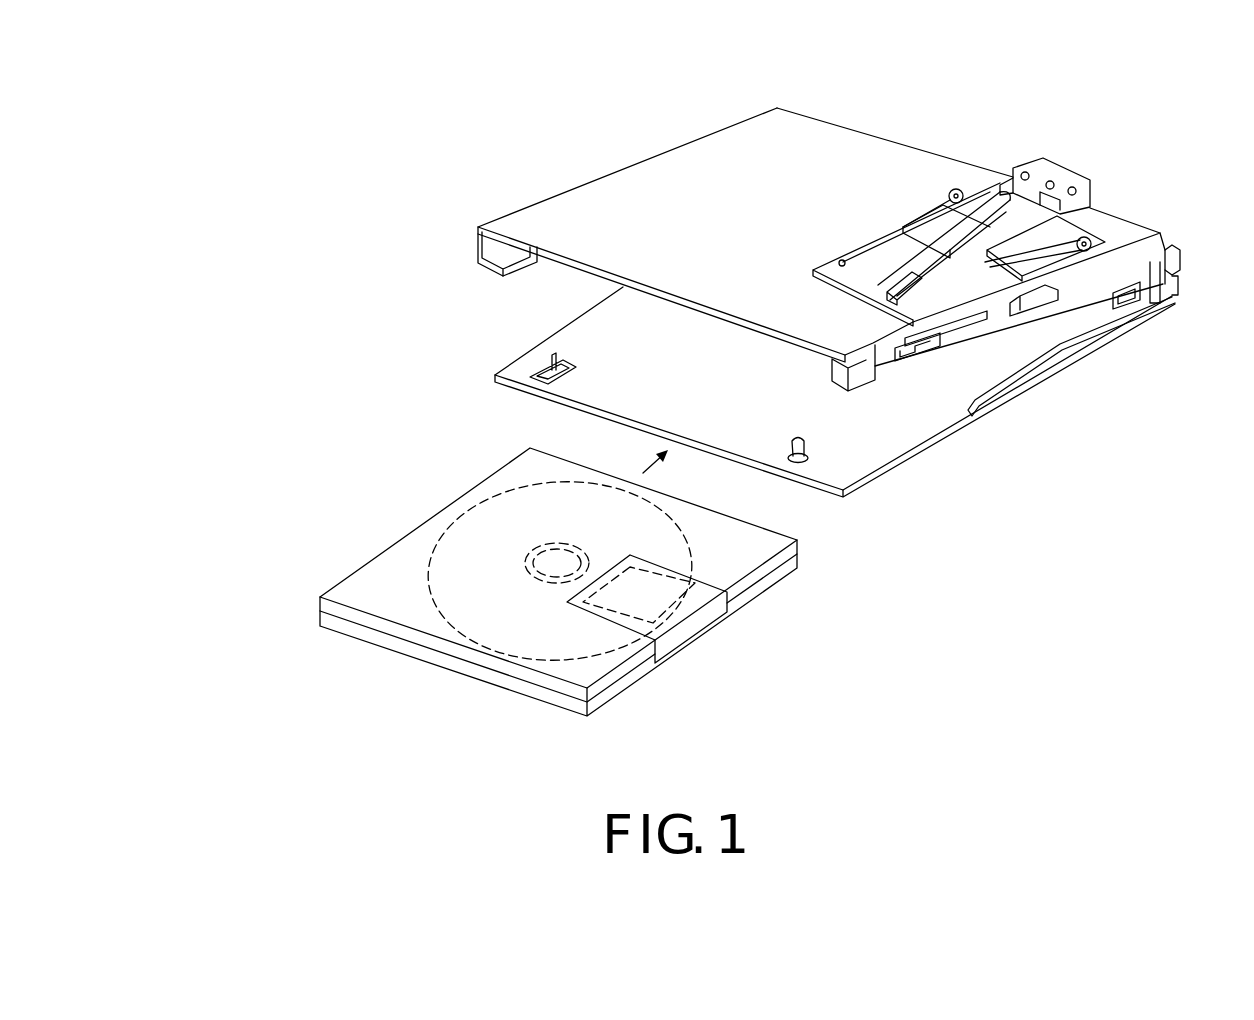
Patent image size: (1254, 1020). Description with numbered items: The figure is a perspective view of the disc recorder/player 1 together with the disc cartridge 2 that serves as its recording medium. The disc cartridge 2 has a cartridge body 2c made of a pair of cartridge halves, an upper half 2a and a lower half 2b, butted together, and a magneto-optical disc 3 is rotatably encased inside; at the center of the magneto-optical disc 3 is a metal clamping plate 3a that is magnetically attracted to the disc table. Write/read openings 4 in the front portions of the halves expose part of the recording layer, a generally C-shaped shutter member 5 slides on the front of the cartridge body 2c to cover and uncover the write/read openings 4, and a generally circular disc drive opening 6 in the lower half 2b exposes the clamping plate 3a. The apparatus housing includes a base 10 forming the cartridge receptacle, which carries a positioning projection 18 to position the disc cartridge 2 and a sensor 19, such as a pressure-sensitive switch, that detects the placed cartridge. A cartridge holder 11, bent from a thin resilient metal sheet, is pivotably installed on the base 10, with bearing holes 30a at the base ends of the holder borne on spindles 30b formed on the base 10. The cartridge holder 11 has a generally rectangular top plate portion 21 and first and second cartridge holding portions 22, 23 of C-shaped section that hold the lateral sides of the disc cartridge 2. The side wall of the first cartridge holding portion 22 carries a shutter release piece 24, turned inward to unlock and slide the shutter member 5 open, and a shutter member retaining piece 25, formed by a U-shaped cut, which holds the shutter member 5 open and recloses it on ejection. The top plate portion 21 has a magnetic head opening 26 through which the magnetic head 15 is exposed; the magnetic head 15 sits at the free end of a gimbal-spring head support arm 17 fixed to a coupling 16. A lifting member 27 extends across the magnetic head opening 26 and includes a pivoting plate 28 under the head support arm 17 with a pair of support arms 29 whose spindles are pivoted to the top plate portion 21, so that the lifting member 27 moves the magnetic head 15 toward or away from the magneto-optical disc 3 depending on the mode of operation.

The disc recorder/player 1 is at (855, 66).
The disc cartridge 2 is at (358, 693).
The upper half 2a is at (317, 600).
The lower half 2b is at (318, 624).
The cartridge body 2c is at (224, 594).
The magneto-optical disc 3 is at (467, 512).
The clamping plate 3a is at (583, 558).
The write/read openings 4 is at (668, 612).
The shutter member 5 is at (700, 637).
The disc drive opening 6 is at (560, 550).
The base 10 is at (928, 460).
The cartridge holder 11 is at (681, 130).
The magnetic head 15 is at (882, 298).
The coupling 16 is at (1093, 202).
The head support arm 17 is at (978, 252).
The positioning projection 18 is at (806, 446).
The sensor 19 is at (576, 370).
The top plate portion 21 is at (881, 152).
The first cartridge holding portion 22 is at (881, 382).
The second cartridge holding portion 23 is at (480, 258).
The shutter release piece 24 is at (1018, 310).
The shutter member retaining piece 25 is at (945, 357).
The magnetic head opening 26 is at (836, 260).
The lifting member 27 is at (918, 218).
The pivoting plate 28 is at (1018, 262).
The support arms 29 is at (950, 196).
The bearing holes 30a is at (1176, 258).
The spindles 30b is at (1176, 274).